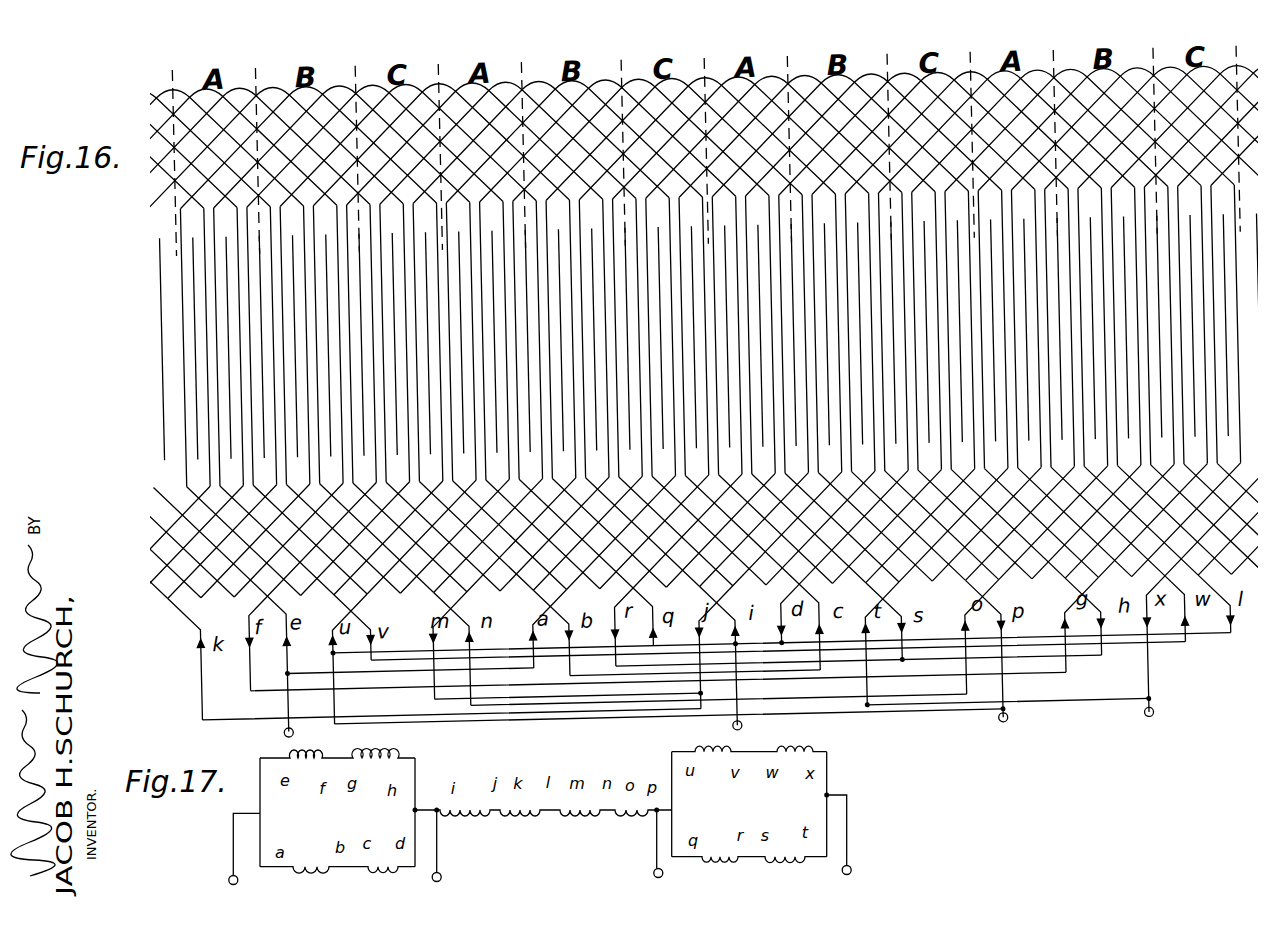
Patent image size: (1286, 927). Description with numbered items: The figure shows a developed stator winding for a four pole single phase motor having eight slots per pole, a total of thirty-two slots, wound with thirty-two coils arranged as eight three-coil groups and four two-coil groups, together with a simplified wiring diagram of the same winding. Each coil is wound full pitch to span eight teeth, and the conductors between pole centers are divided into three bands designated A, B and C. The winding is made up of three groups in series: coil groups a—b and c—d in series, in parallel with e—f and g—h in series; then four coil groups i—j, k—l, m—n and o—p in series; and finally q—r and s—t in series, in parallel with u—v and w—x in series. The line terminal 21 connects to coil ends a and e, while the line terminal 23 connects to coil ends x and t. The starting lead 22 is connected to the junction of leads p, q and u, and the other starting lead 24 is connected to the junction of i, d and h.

In FIG. 16, the line terminal 21 is at (276, 732).
In FIG. 17, the line terminal 21 is at (229, 881).
In FIG. 16, the starting lead 22 is at (996, 736).
In FIG. 17, the starting lead 22 is at (654, 872).
In FIG. 16, the line terminal 23 is at (1142, 734).
In FIG. 17, the line terminal 23 is at (851, 868).
In FIG. 16, the starting lead 24 is at (733, 734).
In FIG. 17, the starting lead 24 is at (440, 874).